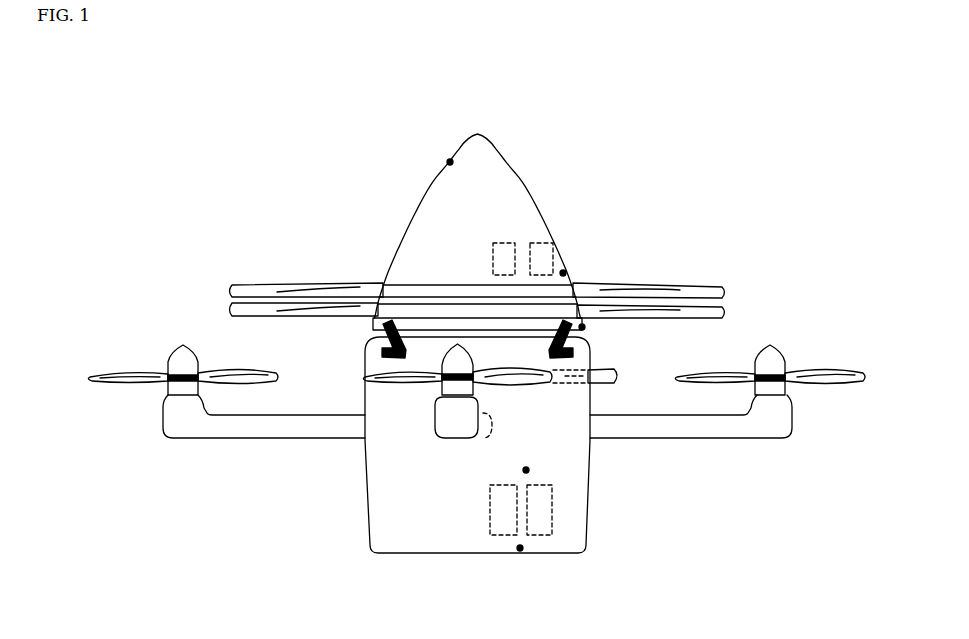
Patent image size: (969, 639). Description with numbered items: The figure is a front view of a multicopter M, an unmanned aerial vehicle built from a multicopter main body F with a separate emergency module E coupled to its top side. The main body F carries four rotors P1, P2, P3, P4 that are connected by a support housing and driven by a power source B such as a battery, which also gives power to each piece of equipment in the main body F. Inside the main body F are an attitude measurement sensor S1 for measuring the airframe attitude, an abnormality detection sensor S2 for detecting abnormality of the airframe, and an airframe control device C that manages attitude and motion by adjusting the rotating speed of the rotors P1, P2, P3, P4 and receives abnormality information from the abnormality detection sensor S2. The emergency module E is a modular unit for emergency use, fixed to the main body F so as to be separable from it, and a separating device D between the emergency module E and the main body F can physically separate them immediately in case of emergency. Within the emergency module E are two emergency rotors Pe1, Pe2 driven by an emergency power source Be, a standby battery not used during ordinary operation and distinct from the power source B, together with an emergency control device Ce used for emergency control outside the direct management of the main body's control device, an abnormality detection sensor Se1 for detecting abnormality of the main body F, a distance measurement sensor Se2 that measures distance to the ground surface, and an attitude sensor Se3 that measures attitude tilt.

The multicopter M is at (225, 116).
The emergency module E is at (534, 197).
The abnormality detection sensor Se1 is at (449, 159).
The distance measurement sensor Se2 is at (585, 328).
The attitude sensor Se3 is at (566, 272).
The emergency control device Ce is at (493, 247).
The emergency power source Be is at (552, 248).
The emergency rotor Pe1 is at (724, 288).
The emergency rotor Pe2 is at (727, 308).
The separating device D is at (568, 356).
The multicopter main body F is at (372, 553).
The attitude measurement sensor S1 is at (530, 470).
The abnormality detection sensor S2 is at (520, 552).
The airframe control device C is at (495, 518).
The power source B is at (547, 518).
The rotor P1 is at (125, 372).
The rotor P2 is at (372, 397).
The rotor P3 is at (806, 368).
The rotor P4 is at (612, 382).